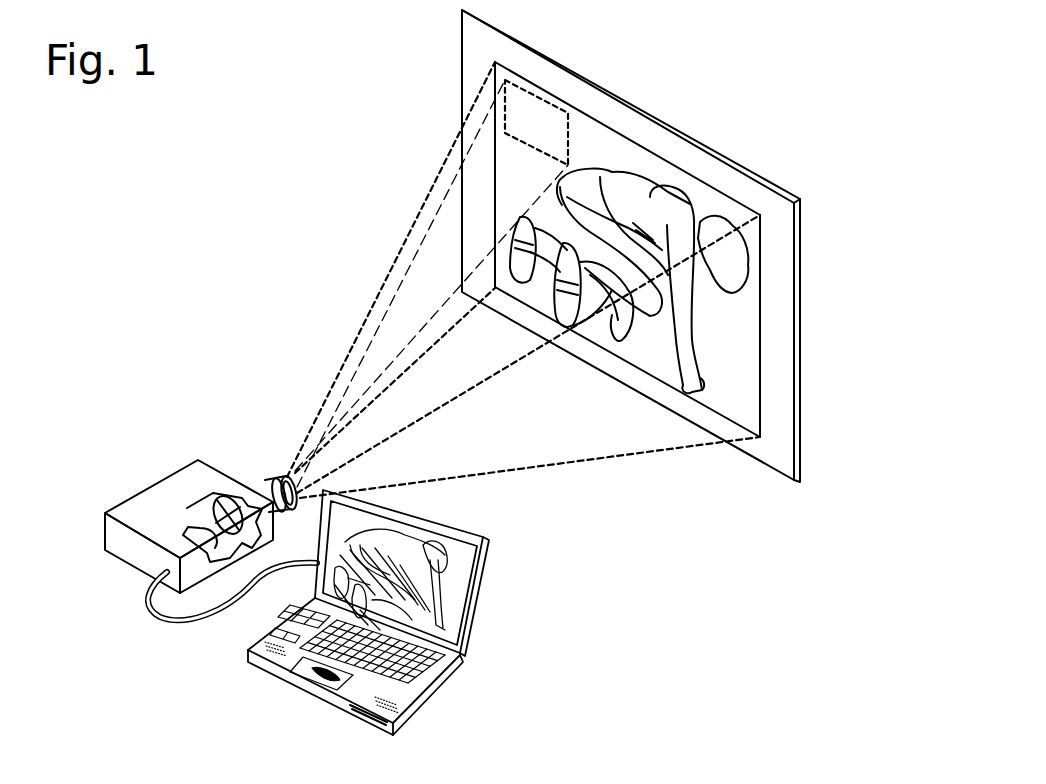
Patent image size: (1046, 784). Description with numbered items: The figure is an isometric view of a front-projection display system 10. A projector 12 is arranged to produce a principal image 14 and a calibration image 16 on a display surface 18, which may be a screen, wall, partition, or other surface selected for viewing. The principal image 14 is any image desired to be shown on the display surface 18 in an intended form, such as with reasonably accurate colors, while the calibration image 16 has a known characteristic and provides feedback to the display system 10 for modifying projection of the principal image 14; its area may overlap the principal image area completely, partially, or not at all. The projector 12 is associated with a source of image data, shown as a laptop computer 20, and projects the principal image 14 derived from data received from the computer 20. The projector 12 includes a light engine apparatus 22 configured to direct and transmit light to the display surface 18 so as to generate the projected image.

The display system 10 is at (176, 163).
The projector 12 is at (133, 550).
The principal image 14 is at (667, 170).
The calibration image 16 is at (540, 115).
The display surface 18 is at (597, 102).
The laptop computer 20 is at (488, 555).
The light engine apparatus 22 is at (192, 486).